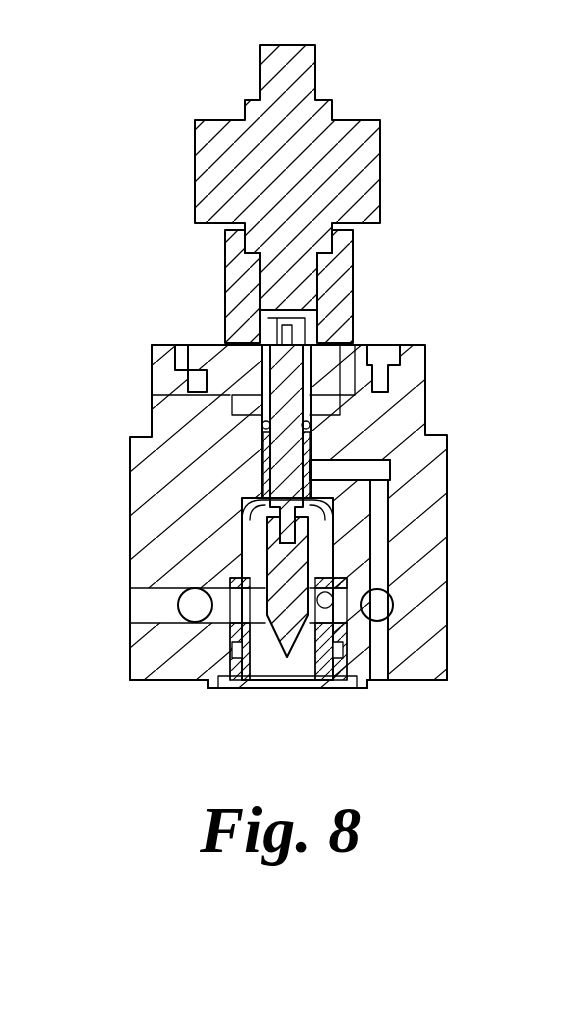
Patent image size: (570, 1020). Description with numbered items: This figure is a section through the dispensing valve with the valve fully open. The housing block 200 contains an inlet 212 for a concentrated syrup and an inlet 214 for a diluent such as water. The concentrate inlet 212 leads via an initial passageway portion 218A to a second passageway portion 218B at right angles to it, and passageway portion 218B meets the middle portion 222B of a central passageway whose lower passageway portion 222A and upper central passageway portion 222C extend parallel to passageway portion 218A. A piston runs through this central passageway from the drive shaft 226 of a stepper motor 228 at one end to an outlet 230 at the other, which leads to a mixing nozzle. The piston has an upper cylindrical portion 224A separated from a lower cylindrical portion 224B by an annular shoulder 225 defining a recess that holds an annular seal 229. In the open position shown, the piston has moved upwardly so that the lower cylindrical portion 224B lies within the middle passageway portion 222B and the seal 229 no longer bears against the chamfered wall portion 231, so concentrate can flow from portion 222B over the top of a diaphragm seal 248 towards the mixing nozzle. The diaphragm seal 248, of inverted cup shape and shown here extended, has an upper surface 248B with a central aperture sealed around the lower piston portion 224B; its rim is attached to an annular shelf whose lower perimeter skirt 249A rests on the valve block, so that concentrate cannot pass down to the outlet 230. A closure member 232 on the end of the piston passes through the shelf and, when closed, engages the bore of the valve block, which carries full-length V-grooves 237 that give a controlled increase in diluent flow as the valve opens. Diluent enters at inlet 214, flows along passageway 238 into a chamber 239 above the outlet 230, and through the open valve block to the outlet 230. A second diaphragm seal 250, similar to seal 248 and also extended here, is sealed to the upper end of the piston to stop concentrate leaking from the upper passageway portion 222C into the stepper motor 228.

The housing block 200 is at (425, 333).
The inlet 212 is at (380, 688).
The inlet 214 is at (130, 610).
The initial passageway portion 218A is at (385, 538).
The second passageway portion 218B is at (365, 460).
The lower passageway portion 222A is at (243, 518).
The middle passageway portion 222B is at (262, 468).
The upper central passageway portion 222C is at (235, 410).
The upper cylindrical portion 224A is at (312, 380).
The lower cylindrical portion 224B is at (268, 447).
The annular shoulder 225 is at (315, 432).
The drive shaft 226 is at (290, 310).
The stepper motor 228 is at (350, 160).
The annular seal 229 is at (370, 395).
The outlet 230 is at (295, 688).
The chamfered wall portion 231 is at (392, 490).
The closure member 232 is at (285, 655).
The V-grooves 237 is at (205, 678).
The passageway 238 is at (145, 625).
The chamber 239 is at (230, 625).
The diaphragm seal 248 is at (265, 548).
The upper surface 248B is at (345, 500).
The lower perimeter skirt 249A is at (395, 605).
The second diaphragm seal 250 is at (190, 372).